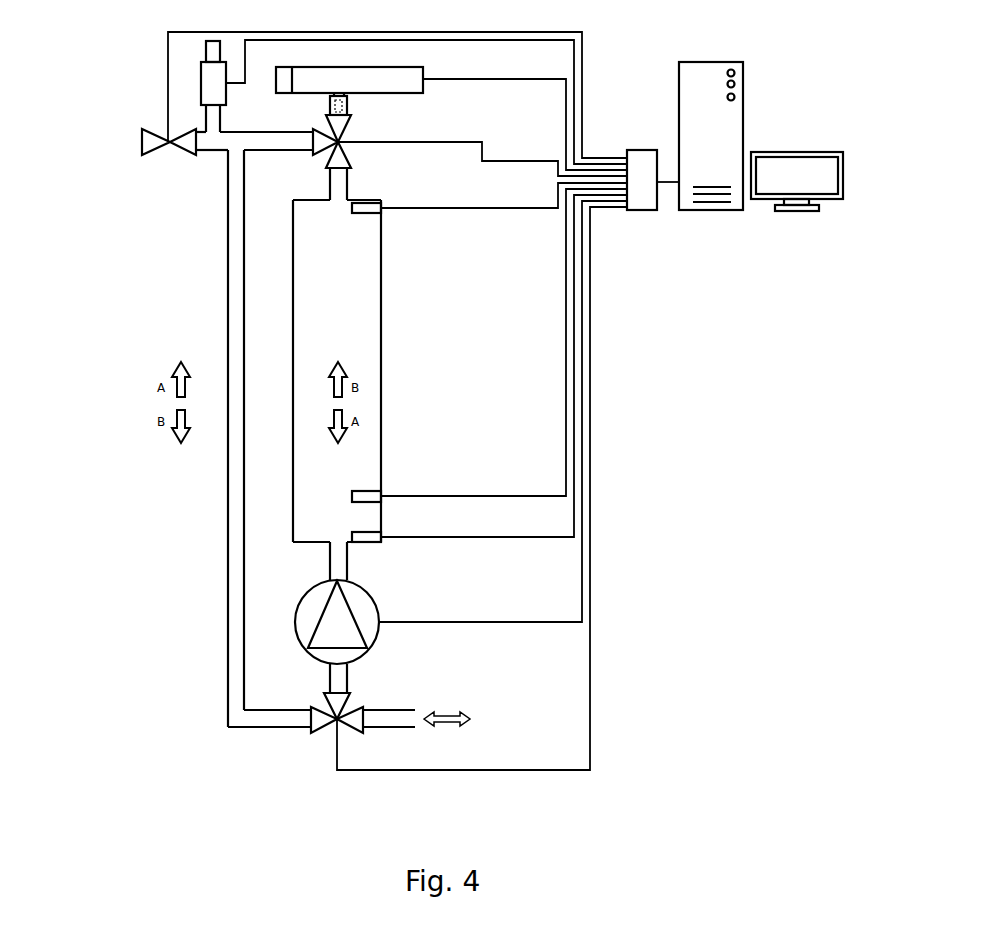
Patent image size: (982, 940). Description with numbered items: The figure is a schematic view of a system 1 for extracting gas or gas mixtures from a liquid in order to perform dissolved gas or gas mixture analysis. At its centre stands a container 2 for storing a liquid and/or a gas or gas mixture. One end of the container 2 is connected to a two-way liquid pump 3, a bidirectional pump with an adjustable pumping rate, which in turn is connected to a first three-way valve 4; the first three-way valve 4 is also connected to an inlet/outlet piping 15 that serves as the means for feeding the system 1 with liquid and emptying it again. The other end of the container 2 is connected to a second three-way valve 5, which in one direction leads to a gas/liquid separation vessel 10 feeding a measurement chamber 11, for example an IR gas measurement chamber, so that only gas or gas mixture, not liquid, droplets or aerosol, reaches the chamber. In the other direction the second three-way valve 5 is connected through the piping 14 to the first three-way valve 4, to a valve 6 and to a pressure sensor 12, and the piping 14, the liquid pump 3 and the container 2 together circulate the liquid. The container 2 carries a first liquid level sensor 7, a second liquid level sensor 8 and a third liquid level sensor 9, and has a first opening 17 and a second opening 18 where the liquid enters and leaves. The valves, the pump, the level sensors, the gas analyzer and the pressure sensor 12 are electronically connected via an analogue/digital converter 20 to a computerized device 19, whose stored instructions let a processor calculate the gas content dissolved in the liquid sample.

The system 1 is at (416, 433).
The container 2 is at (383, 389).
The two-way liquid pump 3 is at (380, 637).
The first three-way valve 4 is at (350, 708).
The second three-way valve 5 is at (348, 147).
The valve 6 is at (168, 152).
The first liquid level sensor 7 is at (372, 210).
The second liquid level sensor 8 is at (366, 497).
The third liquid level sensor 9 is at (374, 537).
The gas/liquid separation vessel 10 is at (350, 104).
The measurement chamber 11 is at (407, 82).
The pressure sensor 12 is at (196, 84).
The piping 14 is at (227, 290).
The inlet/outlet piping 15 is at (395, 727).
The first opening 17 is at (336, 200).
The second opening 18 is at (240, 553).
The computerized device 19 is at (707, 212).
The analogue/digital converter 20 is at (643, 212).